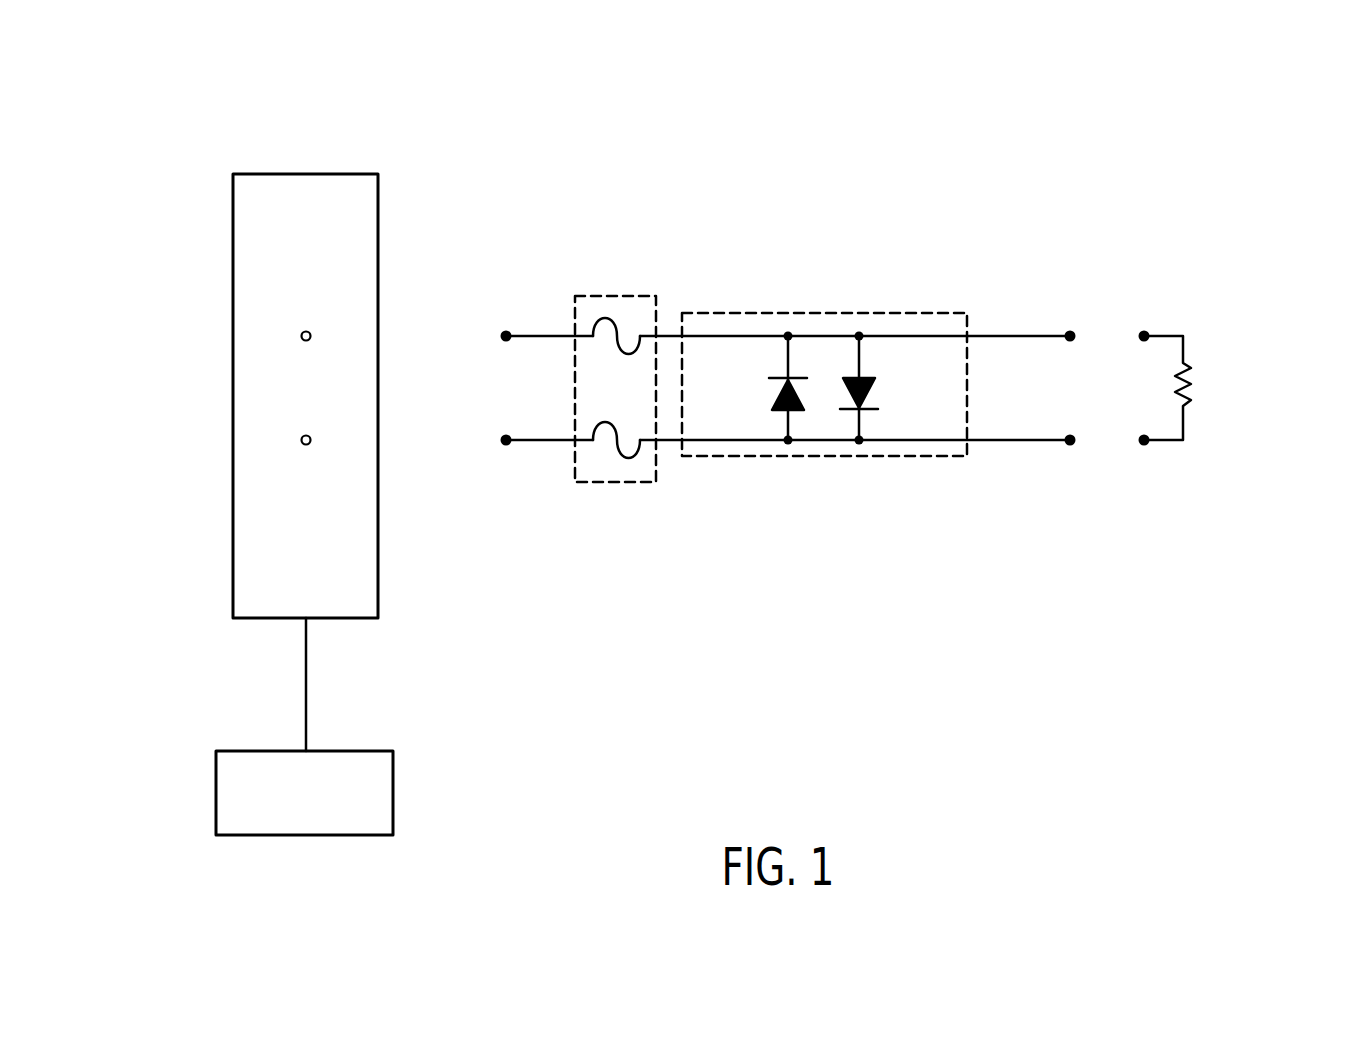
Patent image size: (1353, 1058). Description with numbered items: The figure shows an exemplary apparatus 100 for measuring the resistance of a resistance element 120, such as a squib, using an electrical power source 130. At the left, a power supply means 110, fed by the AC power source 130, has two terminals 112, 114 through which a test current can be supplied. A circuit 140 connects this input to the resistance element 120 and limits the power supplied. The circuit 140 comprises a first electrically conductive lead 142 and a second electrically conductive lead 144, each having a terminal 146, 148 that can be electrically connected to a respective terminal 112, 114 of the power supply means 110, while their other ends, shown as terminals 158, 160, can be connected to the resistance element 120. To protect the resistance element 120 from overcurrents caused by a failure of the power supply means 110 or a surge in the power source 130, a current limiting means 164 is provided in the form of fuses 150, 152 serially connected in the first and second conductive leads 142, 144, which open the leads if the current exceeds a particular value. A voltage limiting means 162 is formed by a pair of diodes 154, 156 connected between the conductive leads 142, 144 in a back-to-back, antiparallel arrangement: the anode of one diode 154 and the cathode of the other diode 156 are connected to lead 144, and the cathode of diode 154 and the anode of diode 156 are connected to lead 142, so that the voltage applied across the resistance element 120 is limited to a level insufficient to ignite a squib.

The apparatus 100 is at (942, 138).
The power supply means 110 is at (346, 174).
The terminal of power supply means 112 is at (301, 336).
The terminal of power supply means 114 is at (301, 440).
The resistance element 120 is at (1194, 377).
The electrical power source 130 is at (395, 777).
The circuit 140 is at (822, 254).
The first electrically conductive lead 142 is at (537, 336).
The second electrically conductive lead 144 is at (538, 445).
The terminal of first conductive lead 146 is at (501, 336).
The terminal of second conductive lead 148 is at (501, 440).
The fuse 150 is at (605, 318).
The fuse 152 is at (595, 429).
The diode 154 is at (776, 396).
The diode 156 is at (868, 396).
The first output terminal 158 is at (1072, 331).
The second output terminal 160 is at (1073, 447).
The voltage limiting means 162 is at (802, 462).
The current limiting means 164 is at (613, 490).